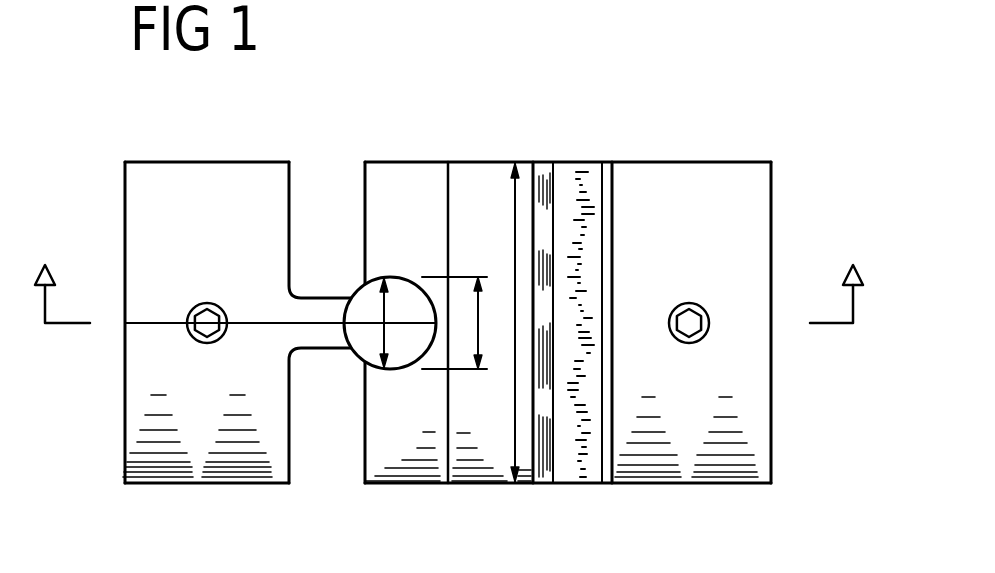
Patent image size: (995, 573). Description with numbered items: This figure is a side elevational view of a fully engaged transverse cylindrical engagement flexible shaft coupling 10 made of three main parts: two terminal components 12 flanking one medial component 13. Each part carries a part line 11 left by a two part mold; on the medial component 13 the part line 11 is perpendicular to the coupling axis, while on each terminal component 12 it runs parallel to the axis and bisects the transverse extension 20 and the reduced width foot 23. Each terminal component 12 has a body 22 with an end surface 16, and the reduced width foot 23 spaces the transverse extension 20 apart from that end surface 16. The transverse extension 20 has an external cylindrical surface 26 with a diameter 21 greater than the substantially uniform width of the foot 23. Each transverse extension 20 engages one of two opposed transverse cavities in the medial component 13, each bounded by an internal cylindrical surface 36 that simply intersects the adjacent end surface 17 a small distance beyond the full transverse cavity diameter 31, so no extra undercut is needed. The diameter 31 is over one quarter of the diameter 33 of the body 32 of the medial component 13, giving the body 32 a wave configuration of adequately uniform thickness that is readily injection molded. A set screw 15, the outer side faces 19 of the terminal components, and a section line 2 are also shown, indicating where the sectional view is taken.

The flexible shaft coupling 10 is at (800, 70).
The part line 11 is at (258, 320).
The terminal component 12 is at (290, 133).
The medial component 13 is at (480, 137).
The set screw 15 is at (205, 304).
The end surface 16 is at (289, 468).
The end surface 17 is at (362, 478).
The outer side face 19 is at (124, 425).
The transverse extension 20 is at (364, 350).
The diameter 21 is at (402, 300).
The body 22 is at (214, 138).
The reduced width foot 23 is at (323, 305).
The external cylindrical surface 26 is at (350, 277).
The transverse cavity diameter 31 is at (457, 323).
The body 32 is at (428, 165).
The diameter 33 is at (500, 322).
The internal cylindrical surface 36 is at (368, 372).
The section line 2- 2 is at (448, 262).